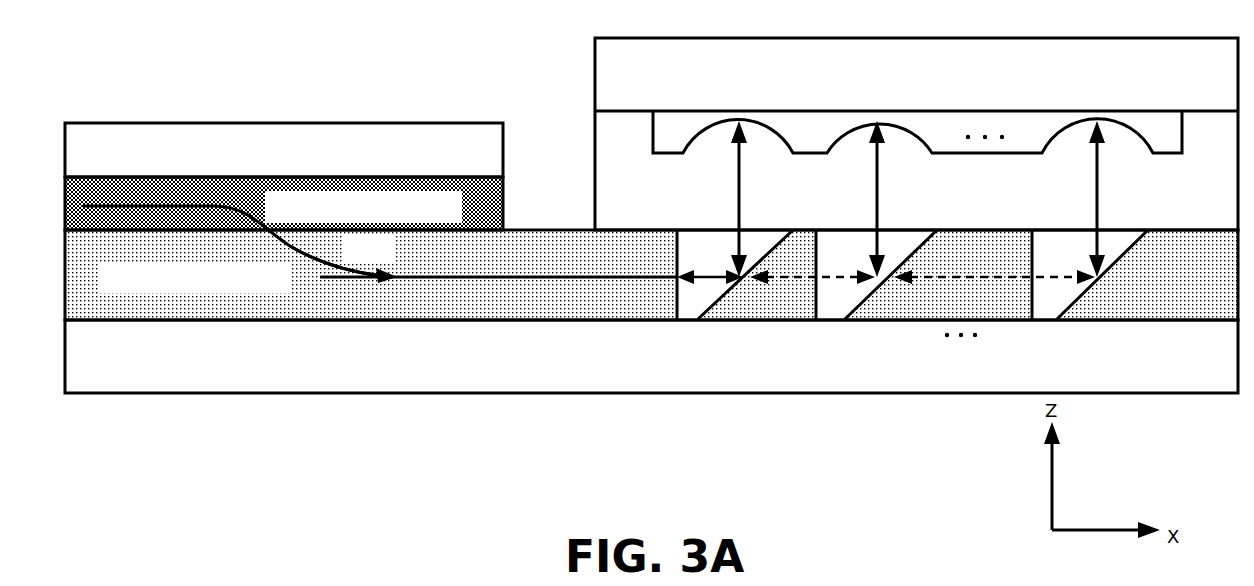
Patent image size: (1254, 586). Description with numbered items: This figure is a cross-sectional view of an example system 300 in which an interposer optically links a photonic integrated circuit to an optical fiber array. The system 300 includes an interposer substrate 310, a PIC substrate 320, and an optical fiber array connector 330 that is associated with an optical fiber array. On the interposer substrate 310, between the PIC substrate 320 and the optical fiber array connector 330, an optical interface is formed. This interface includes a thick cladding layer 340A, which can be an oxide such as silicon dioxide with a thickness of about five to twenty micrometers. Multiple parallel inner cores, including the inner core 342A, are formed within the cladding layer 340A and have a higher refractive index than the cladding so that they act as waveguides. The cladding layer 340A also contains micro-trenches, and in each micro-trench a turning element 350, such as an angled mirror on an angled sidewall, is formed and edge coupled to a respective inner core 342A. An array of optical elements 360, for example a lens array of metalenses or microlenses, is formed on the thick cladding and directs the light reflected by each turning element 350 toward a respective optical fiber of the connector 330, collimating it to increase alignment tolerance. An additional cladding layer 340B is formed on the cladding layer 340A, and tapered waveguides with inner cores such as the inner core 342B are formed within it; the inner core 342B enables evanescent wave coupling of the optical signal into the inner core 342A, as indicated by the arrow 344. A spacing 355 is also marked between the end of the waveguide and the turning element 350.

The system 300 is at (151, 64).
The interposer substrate 310 is at (651, 356).
The PIC substrate 320 is at (284, 150).
The optical fiber array connector 330 is at (916, 134).
The cladding layer 340A is at (651, 275).
The additional cladding layer 340B is at (284, 203).
The inner core 342A is at (430, 280).
The inner core 342B is at (158, 205).
The arrow 344 is at (337, 254).
The turning element 350 is at (730, 292).
The spacing between waveguide end and mirror 355 is at (710, 264).
The array of optical elements 360 is at (917, 163).